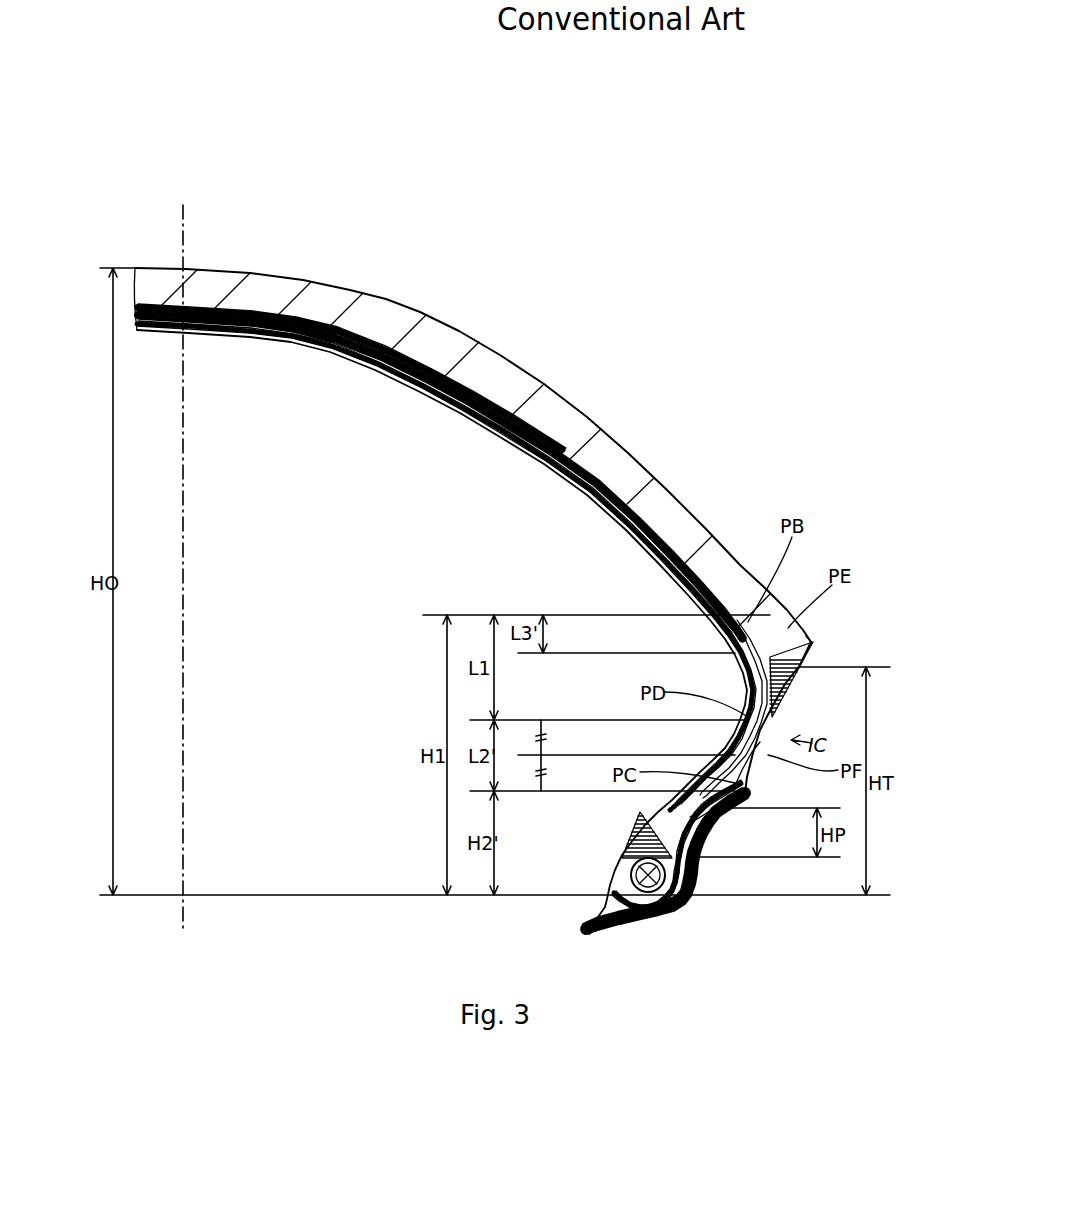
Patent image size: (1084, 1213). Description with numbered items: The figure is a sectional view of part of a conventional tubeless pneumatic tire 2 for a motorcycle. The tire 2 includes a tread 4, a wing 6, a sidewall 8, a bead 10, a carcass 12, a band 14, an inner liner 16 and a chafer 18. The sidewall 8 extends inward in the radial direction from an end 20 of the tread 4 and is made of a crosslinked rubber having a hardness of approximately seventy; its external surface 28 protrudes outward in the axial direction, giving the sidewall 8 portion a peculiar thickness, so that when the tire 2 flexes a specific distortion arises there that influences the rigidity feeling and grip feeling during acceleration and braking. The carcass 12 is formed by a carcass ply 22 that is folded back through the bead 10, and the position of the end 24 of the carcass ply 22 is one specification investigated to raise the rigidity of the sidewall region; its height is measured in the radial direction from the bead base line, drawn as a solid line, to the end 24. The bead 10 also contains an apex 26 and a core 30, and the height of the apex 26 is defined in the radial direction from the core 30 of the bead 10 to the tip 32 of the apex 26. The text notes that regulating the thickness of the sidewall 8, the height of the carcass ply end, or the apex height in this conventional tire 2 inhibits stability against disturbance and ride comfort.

The pneumatic tire 2 is at (660, 254).
The tread 4 is at (473, 313).
The wing 6 is at (800, 667).
The sidewall 8 is at (789, 780).
The bead 10 is at (714, 852).
The carcass 12 is at (640, 545).
The band 14 is at (562, 445).
The inner liner 16 is at (607, 500).
The chafer 18 is at (603, 898).
The end of the tread 20 is at (813, 642).
The carcass ply 22 is at (390, 372).
The end of the carcass ply 24 is at (743, 652).
The apex 26 is at (710, 827).
The external surface of the sidewall 28 is at (760, 742).
The core 30 is at (693, 872).
The tip of the apex 32 is at (663, 802).